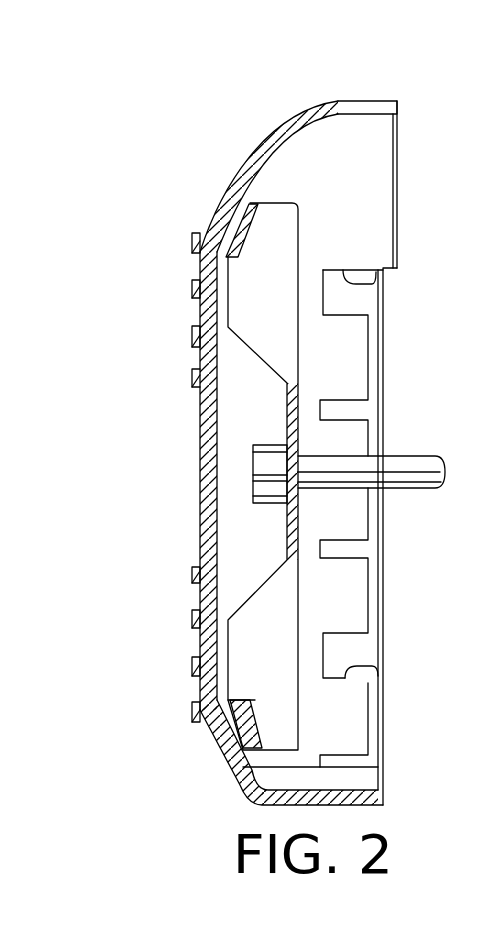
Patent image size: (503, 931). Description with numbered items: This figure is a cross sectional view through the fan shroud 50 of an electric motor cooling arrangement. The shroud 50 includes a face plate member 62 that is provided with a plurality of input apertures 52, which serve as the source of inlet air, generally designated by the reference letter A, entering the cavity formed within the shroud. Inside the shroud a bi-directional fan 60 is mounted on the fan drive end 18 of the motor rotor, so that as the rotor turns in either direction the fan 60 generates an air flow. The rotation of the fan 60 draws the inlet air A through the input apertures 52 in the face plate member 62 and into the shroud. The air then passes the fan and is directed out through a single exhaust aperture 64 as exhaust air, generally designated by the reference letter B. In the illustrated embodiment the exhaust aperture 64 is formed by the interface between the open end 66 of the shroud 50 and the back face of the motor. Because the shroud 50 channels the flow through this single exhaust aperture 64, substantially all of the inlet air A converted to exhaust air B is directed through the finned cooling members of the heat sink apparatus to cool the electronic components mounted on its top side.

The fan drive end 18 is at (412, 478).
The fan shroud 50 is at (194, 171).
The input apertures 52 is at (200, 357).
The bi-directional fan 60 is at (258, 633).
The face plate member 62 is at (200, 520).
The exhaust aperture 64 is at (425, 96).
The open end 66 is at (398, 264).
The inlet air A is at (226, 265).
The exhaust air B is at (248, 385).